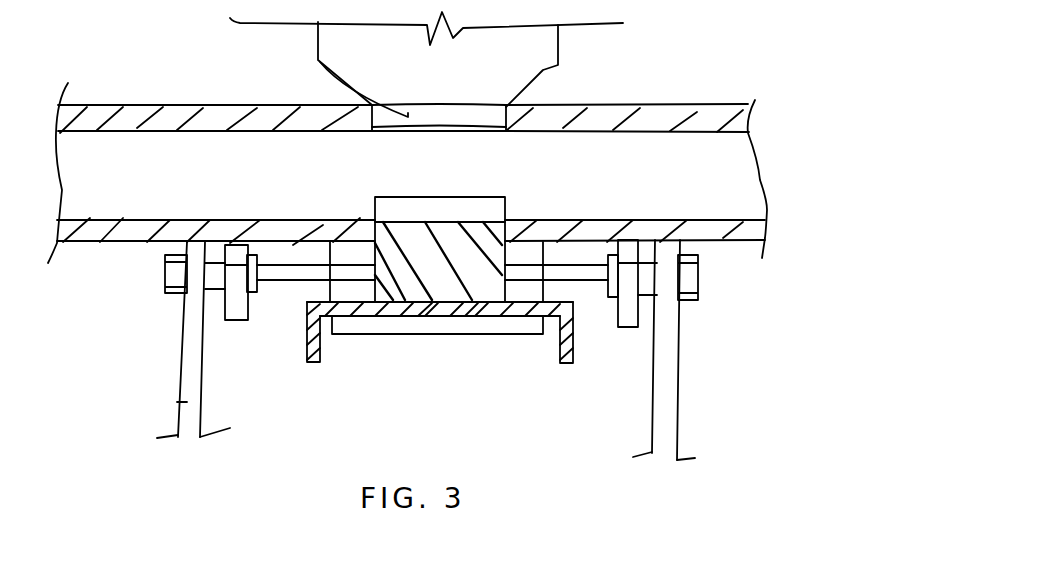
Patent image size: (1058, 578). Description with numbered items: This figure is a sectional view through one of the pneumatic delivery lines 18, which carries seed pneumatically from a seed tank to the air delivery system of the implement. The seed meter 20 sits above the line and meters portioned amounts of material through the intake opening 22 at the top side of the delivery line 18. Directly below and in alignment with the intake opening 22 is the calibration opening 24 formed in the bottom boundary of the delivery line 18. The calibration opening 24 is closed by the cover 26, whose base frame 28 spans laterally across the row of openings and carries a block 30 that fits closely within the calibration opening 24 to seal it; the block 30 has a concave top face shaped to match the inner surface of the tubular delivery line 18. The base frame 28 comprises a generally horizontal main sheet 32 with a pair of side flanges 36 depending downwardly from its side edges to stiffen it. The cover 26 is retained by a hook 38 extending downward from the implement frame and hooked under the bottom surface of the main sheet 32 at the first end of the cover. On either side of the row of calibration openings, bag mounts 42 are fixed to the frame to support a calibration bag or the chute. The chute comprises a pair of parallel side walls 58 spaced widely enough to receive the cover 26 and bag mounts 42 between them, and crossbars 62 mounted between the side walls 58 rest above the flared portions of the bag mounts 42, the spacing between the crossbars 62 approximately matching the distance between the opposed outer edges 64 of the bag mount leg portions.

The pneumatic delivery line 18 is at (650, 113).
The seed meter 20 is at (540, 52).
The intake opening 22 is at (318, 55).
The calibration opening 24 is at (405, 208).
The cover 26 is at (288, 348).
The base frame 28 is at (426, 308).
The block 30 is at (434, 248).
The main sheet 32 is at (473, 311).
The side flange 36 is at (333, 357).
The hook 38 is at (383, 340).
The bag mount 42 is at (234, 324).
The side wall 58 is at (187, 402).
The crossbar 62 is at (582, 270).
The outer edge 64 is at (213, 273).